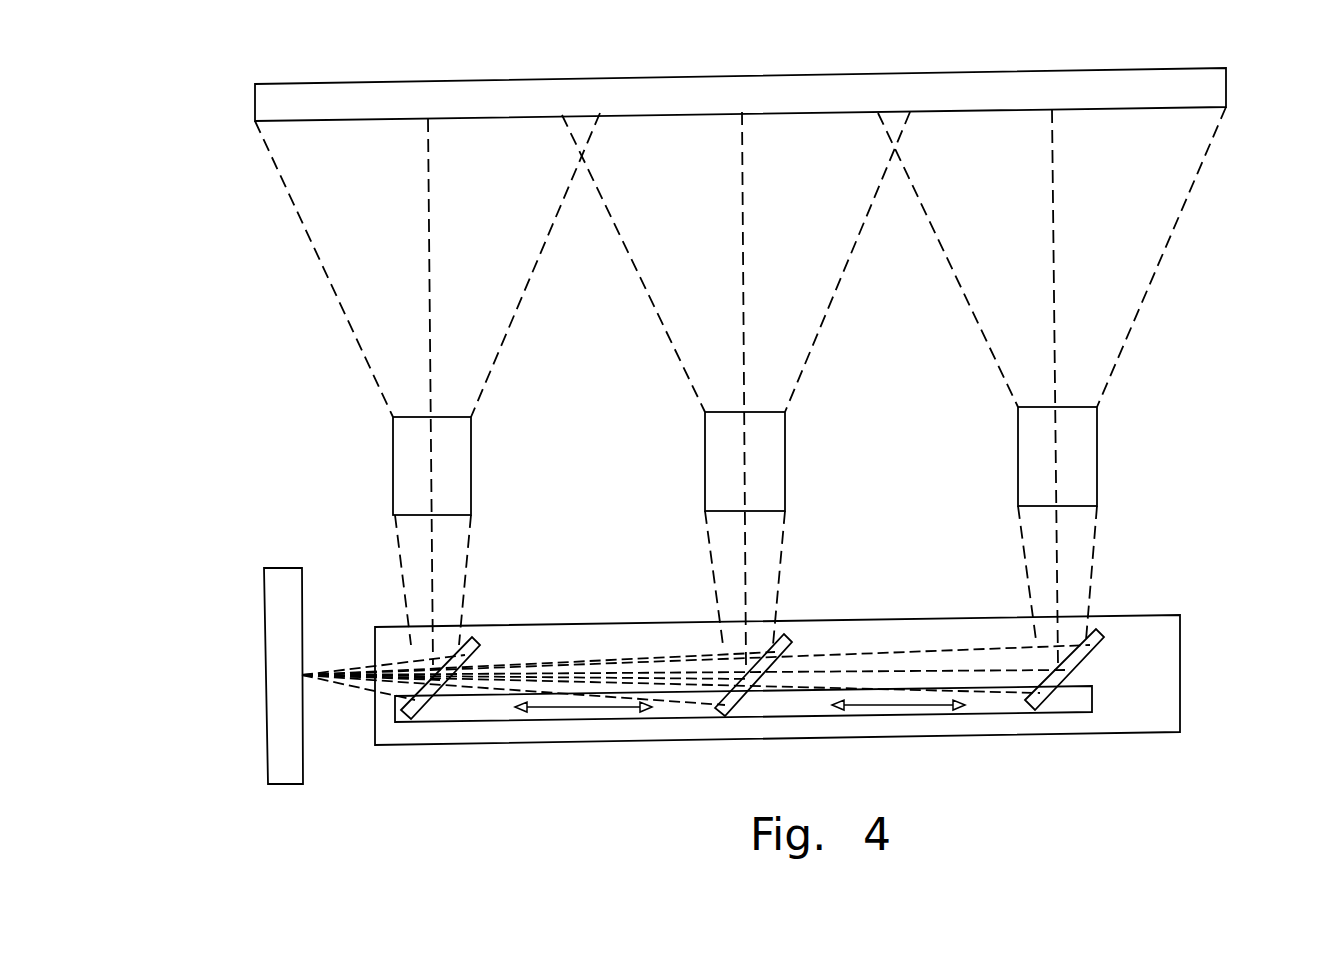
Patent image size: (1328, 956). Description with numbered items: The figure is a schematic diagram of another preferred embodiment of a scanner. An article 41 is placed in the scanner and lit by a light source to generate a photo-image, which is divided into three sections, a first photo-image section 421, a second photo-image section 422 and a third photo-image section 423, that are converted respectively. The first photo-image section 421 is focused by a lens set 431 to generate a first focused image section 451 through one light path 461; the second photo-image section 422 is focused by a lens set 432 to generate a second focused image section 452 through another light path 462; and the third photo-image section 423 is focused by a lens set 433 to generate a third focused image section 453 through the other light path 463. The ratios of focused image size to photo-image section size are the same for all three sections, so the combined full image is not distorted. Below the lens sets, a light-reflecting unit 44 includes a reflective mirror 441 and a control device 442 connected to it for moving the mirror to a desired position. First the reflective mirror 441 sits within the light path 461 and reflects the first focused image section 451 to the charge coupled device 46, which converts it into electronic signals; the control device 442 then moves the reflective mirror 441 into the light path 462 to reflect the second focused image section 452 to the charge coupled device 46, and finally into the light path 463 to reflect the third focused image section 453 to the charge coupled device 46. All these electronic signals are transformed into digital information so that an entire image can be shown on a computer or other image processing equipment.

The article 41 is at (1193, 90).
The first photo-image section 421 is at (291, 200).
The second photo-image section 422 is at (836, 290).
The third photo-image section 423 is at (1195, 180).
The lens set 431 is at (413, 458).
The lens set 432 is at (765, 455).
The lens set 433 is at (1078, 448).
The light-reflecting unit 44 is at (1163, 646).
The reflective mirror 441 is at (478, 641).
The control device 442 is at (1080, 696).
The first focused image section 451 is at (413, 657).
The second focused image section 452 is at (725, 650).
The third focused image section 453 is at (1038, 643).
The light path 461 is at (433, 548).
The light path 462 is at (747, 548).
The light path 463 is at (1060, 540).
The charge coupled device 46 is at (273, 655).